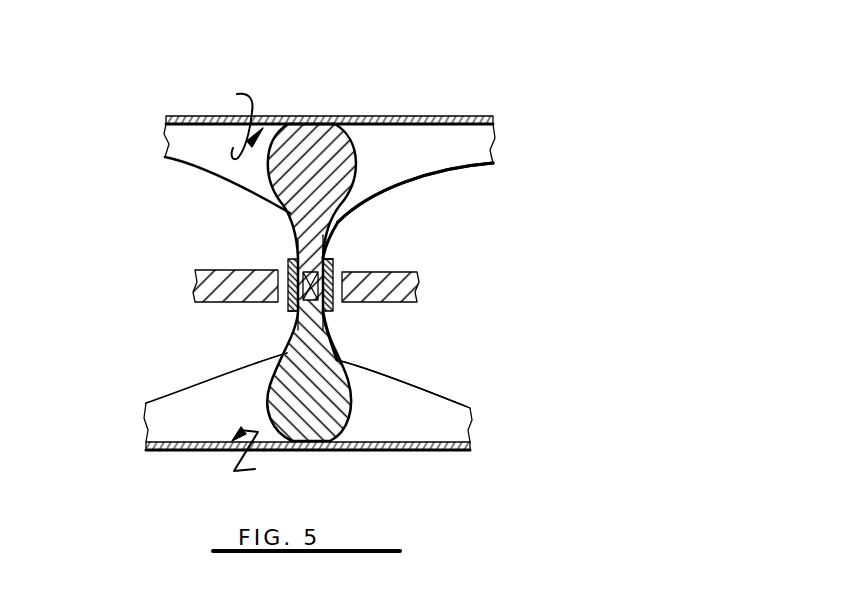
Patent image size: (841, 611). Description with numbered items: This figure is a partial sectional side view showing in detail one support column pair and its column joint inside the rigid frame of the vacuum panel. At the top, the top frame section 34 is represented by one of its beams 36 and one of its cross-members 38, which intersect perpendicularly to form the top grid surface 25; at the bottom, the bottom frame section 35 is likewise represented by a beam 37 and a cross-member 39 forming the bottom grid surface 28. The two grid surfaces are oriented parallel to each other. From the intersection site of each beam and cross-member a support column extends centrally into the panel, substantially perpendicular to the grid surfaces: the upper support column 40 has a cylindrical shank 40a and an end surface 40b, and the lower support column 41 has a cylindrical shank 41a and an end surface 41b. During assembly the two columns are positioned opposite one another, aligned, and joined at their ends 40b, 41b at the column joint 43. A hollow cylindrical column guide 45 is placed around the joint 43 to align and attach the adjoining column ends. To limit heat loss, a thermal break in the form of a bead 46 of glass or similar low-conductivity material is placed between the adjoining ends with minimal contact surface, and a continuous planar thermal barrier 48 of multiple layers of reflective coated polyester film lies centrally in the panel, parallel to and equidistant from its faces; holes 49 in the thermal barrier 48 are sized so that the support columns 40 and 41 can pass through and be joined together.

The top grid surface 25 is at (233, 121).
The bottom grid surface 28 is at (261, 455).
The top frame section 34 is at (280, 154).
The bottom frame section 35 is at (288, 401).
The beams 36 is at (195, 152).
The beams 37 is at (165, 420).
The cross-members 38 is at (338, 122).
The cross-members 39 is at (323, 446).
The support column 40 is at (285, 214).
The cylindrical shank 40a is at (337, 213).
The end surface 40b is at (333, 243).
The support column 41 is at (284, 354).
The cylindrical shank 41a is at (350, 364).
The end surface 41b is at (333, 340).
The column joint 43 is at (345, 265).
The column guide 45 is at (290, 312).
The bead 46 is at (300, 245).
The thermal barrier 48 is at (194, 288).
The holes 49 is at (286, 263).